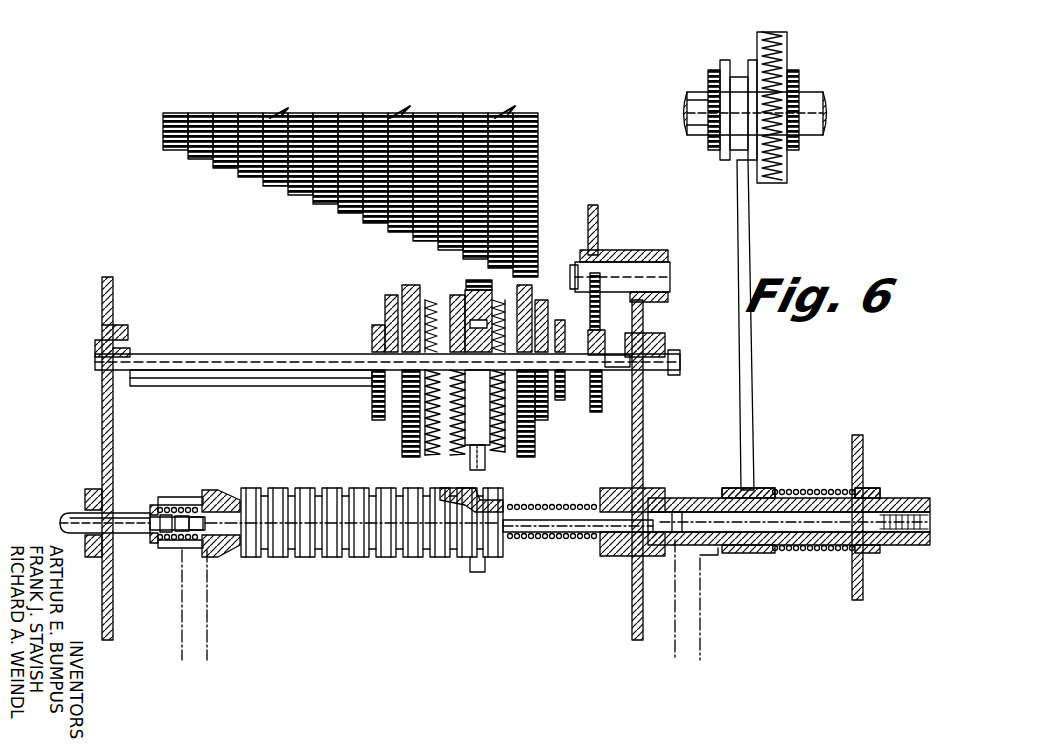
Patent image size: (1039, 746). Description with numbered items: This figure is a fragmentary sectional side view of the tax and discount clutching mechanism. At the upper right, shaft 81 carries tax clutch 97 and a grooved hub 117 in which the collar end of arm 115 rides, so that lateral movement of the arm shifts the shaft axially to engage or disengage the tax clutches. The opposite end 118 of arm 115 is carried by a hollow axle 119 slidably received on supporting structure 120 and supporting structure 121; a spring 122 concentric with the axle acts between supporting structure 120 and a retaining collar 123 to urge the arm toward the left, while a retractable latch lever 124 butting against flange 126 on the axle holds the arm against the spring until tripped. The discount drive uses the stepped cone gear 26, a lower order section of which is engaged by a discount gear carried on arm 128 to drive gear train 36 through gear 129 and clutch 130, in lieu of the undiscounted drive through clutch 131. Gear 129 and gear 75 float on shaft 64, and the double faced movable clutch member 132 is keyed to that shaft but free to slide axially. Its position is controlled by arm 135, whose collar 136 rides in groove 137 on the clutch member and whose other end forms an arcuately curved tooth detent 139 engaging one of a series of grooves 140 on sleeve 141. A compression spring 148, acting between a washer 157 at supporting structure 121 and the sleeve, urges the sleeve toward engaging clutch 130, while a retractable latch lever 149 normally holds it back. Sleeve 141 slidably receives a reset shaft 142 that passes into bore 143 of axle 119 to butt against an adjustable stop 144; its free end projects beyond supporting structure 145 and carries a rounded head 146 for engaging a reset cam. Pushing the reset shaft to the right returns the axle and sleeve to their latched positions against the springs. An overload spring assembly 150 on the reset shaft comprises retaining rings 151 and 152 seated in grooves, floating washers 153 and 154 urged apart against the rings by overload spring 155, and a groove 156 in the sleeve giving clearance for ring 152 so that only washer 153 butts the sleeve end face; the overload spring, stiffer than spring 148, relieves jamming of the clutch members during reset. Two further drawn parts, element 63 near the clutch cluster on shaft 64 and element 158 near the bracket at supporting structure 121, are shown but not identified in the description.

The stepped cone gear 26 is at (242, 168).
The gear train 36 is at (600, 420).
The bearing sleeve 63 is at (540, 318).
The shaft 64 is at (236, 356).
The gear 75 is at (538, 438).
The shaft 81 is at (700, 92).
The tax clutch 97 is at (775, 185).
The arm 115 is at (752, 376).
The grooved hub 117 is at (710, 152).
The opposite end of arm 118 is at (760, 553).
The hollow axle 119 is at (920, 497).
The supporting structure 120 is at (851, 452).
The supporting structure 121 is at (645, 465).
The spring 122 is at (828, 553).
The retaining collar 123 is at (782, 553).
The retractable latch lever 124 is at (700, 642).
The flange 126 is at (718, 556).
The arm 128 is at (392, 294).
The gear 129 is at (400, 435).
The clutch 130 is at (422, 292).
The clutch 131 is at (510, 448).
The double faced movable clutch member 132 is at (446, 445).
The arm 135 is at (488, 462).
The collar 136 is at (490, 295).
The groove 137 is at (472, 295).
The arcuately curved tooth detent 139 is at (478, 572).
The grooves 140 is at (405, 558).
The sleeve 141 is at (333, 558).
The reset shaft 142 is at (128, 540).
The bore 143 is at (694, 510).
The stop 144 is at (932, 522).
The supporting structure 145 is at (100, 482).
The rounded head 146 is at (62, 518).
The compression spring 148 is at (563, 540).
The retractable latch lever 149 is at (205, 628).
The overload spring assembly 150 is at (168, 505).
The retaining ring 151 is at (150, 512).
The retaining ring 152 is at (205, 514).
The floating washer 153 is at (185, 512).
The floating washer 154 is at (165, 510).
The overload spring 155 is at (163, 548).
The groove 156 is at (225, 492).
The washer 157 is at (612, 558).
The bracket 158 is at (652, 487).